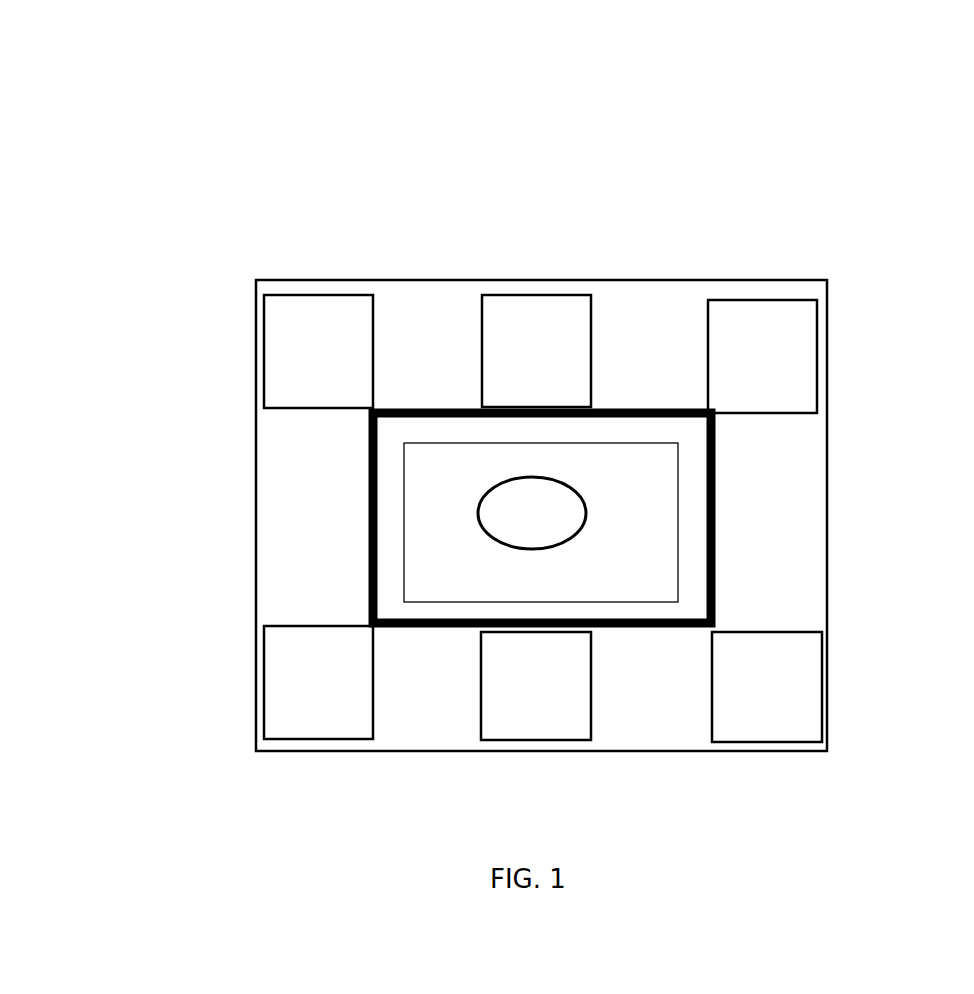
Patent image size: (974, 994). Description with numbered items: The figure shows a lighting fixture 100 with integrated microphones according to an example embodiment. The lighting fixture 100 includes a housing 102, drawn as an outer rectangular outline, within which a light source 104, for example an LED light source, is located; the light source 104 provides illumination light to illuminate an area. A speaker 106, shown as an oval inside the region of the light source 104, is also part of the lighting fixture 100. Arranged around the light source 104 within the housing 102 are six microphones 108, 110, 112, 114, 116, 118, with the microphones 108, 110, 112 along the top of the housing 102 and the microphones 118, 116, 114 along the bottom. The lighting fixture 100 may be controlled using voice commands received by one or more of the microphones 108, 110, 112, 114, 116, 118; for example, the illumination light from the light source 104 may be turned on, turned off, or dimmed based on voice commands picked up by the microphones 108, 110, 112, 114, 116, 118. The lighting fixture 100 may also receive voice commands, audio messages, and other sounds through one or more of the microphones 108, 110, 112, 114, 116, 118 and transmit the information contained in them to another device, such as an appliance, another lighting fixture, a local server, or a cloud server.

The lighting fixture 100 is at (187, 133).
The housing 102 is at (457, 282).
The light source 104 is at (404, 512).
The speaker 106 is at (587, 517).
The microphone 108 is at (272, 343).
The microphone 110 is at (573, 297).
The microphone 112 is at (777, 303).
The microphone 114 is at (815, 705).
The microphone 116 is at (487, 710).
The microphone 118 is at (270, 708).